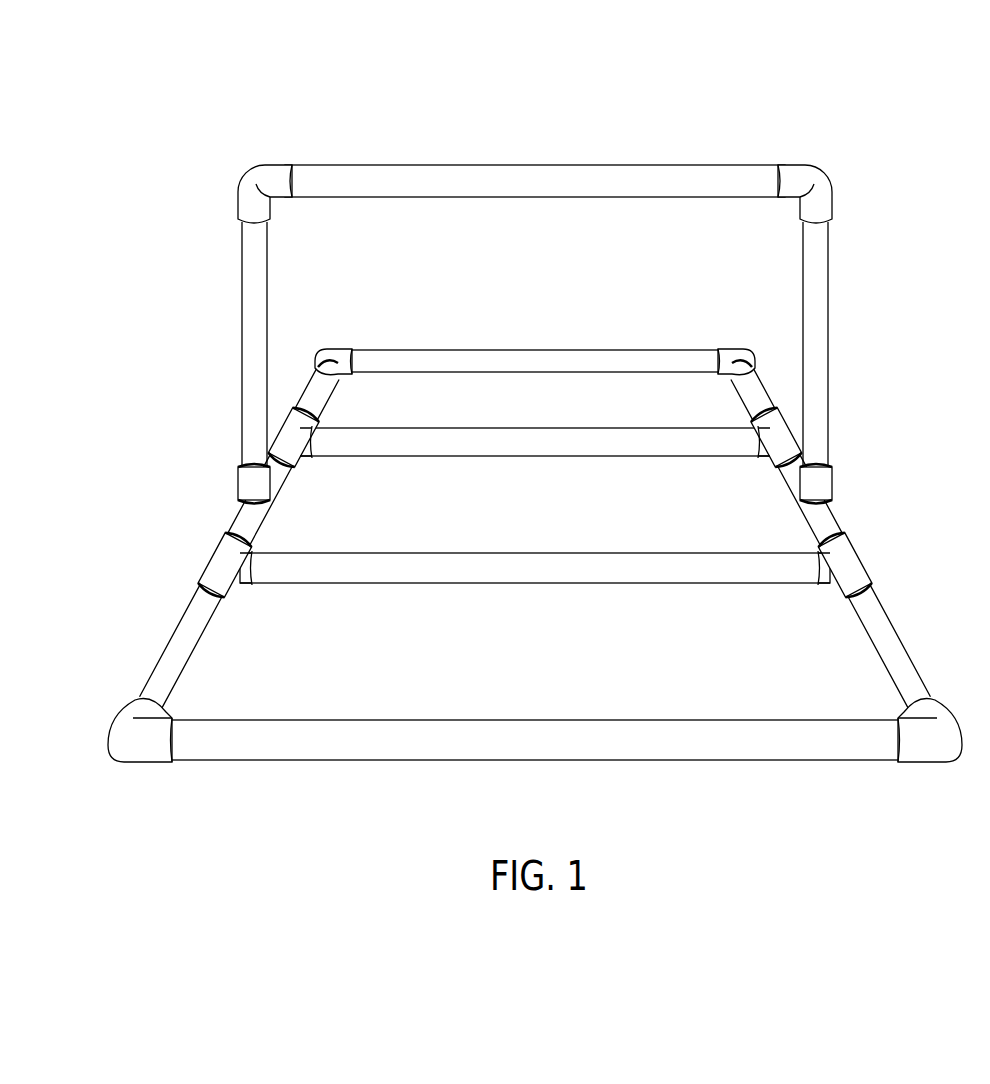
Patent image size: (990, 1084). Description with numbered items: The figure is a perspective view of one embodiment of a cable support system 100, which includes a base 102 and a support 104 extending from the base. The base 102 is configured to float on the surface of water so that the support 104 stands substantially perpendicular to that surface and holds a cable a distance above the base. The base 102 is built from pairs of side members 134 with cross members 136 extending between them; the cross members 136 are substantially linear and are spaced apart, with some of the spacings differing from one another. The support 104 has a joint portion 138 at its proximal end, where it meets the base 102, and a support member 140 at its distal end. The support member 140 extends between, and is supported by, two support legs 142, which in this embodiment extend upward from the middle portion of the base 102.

The cable support system 100 is at (170, 160).
The base 102 is at (530, 538).
The support 104 is at (536, 314).
The side members 134 is at (320, 402).
The cross members 136 is at (582, 352).
The joint portion 138 is at (828, 484).
The support member 140 is at (680, 170).
The support legs 142 is at (240, 258).